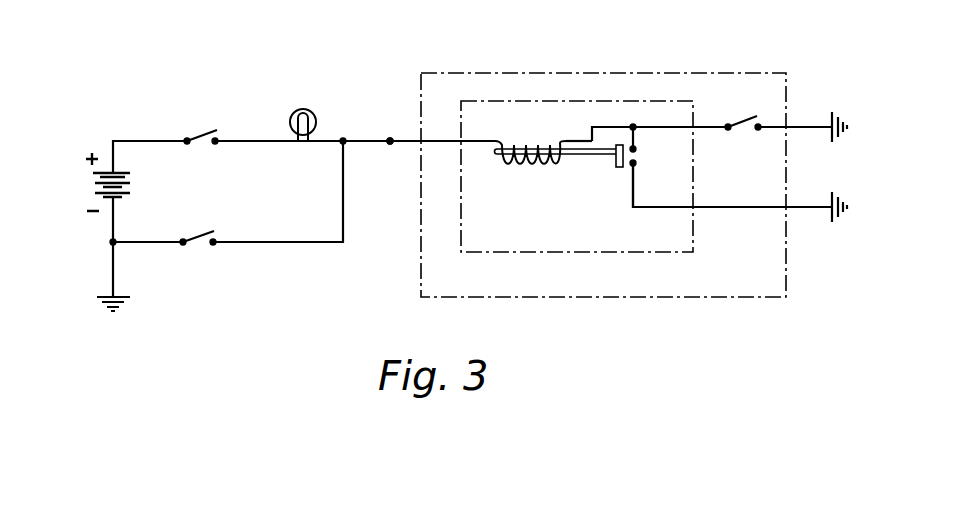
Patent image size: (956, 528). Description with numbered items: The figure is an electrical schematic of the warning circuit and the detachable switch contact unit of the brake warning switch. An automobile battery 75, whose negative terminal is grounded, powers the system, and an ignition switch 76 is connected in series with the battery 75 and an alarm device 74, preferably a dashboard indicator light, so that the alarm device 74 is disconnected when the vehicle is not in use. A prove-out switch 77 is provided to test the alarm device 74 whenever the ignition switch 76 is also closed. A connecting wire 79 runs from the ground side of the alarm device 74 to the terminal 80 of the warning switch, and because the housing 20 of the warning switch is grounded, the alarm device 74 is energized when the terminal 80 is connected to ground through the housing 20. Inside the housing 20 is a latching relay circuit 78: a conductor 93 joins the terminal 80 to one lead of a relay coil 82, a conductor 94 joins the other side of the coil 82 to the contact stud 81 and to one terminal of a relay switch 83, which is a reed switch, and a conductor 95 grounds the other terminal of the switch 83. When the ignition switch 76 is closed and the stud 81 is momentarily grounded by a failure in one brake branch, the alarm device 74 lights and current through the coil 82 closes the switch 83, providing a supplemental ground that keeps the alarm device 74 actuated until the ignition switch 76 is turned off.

The housing 20 is at (727, 70).
The alarm device 74 is at (298, 108).
The automobile battery 75 is at (93, 187).
The ignition switch 76 is at (205, 136).
The prove-out switch 77 is at (196, 240).
The latching relay circuit 78 is at (578, 256).
The connecting wire 79 is at (360, 138).
The terminal 80 is at (404, 145).
The contact stud 81 is at (742, 122).
The relay coil 82 is at (518, 168).
The relay switch 83 is at (607, 158).
The conductor 93 is at (488, 140).
The conductor 94 is at (577, 140).
The conductor 95 is at (664, 208).